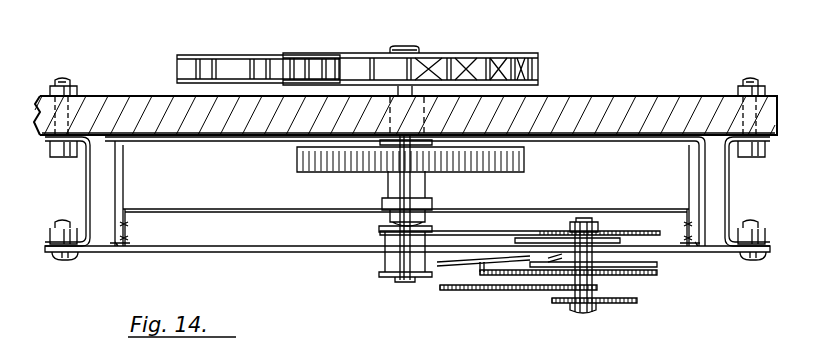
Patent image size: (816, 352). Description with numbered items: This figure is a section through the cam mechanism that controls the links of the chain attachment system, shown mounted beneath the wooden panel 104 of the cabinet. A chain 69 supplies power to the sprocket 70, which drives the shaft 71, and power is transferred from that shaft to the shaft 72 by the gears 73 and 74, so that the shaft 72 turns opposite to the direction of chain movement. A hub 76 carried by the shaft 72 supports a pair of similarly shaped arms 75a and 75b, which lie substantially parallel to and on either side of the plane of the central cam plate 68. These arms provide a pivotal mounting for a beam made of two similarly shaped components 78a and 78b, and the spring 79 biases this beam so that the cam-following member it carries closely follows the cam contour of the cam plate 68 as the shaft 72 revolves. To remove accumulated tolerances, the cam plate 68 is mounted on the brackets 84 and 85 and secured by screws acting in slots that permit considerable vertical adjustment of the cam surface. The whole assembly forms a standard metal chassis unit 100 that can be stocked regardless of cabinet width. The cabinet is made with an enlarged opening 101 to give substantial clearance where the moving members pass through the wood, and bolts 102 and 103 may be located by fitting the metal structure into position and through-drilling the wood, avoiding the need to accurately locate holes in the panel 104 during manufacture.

The central cam plate 68 is at (258, 248).
The chain 69 is at (230, 56).
The sprocket 70 is at (298, 54).
The shaft 71 is at (409, 46).
The shaft 72 is at (388, 229).
The gear 73 is at (414, 164).
The gear 74 is at (312, 172).
The arm 75a is at (393, 278).
The arm 75b is at (480, 231).
The hub 76 is at (385, 266).
The beam component 78a is at (600, 263).
The beam component 78b is at (675, 202).
The spring 79 is at (460, 272).
The bracket 84 is at (82, 192).
The bracket 85 is at (738, 192).
The chassis unit 100 is at (123, 176).
The enlarged opening 101 is at (440, 121).
The bolt 102 is at (72, 82).
The bolt 103 is at (752, 80).
The panel 104 is at (624, 96).